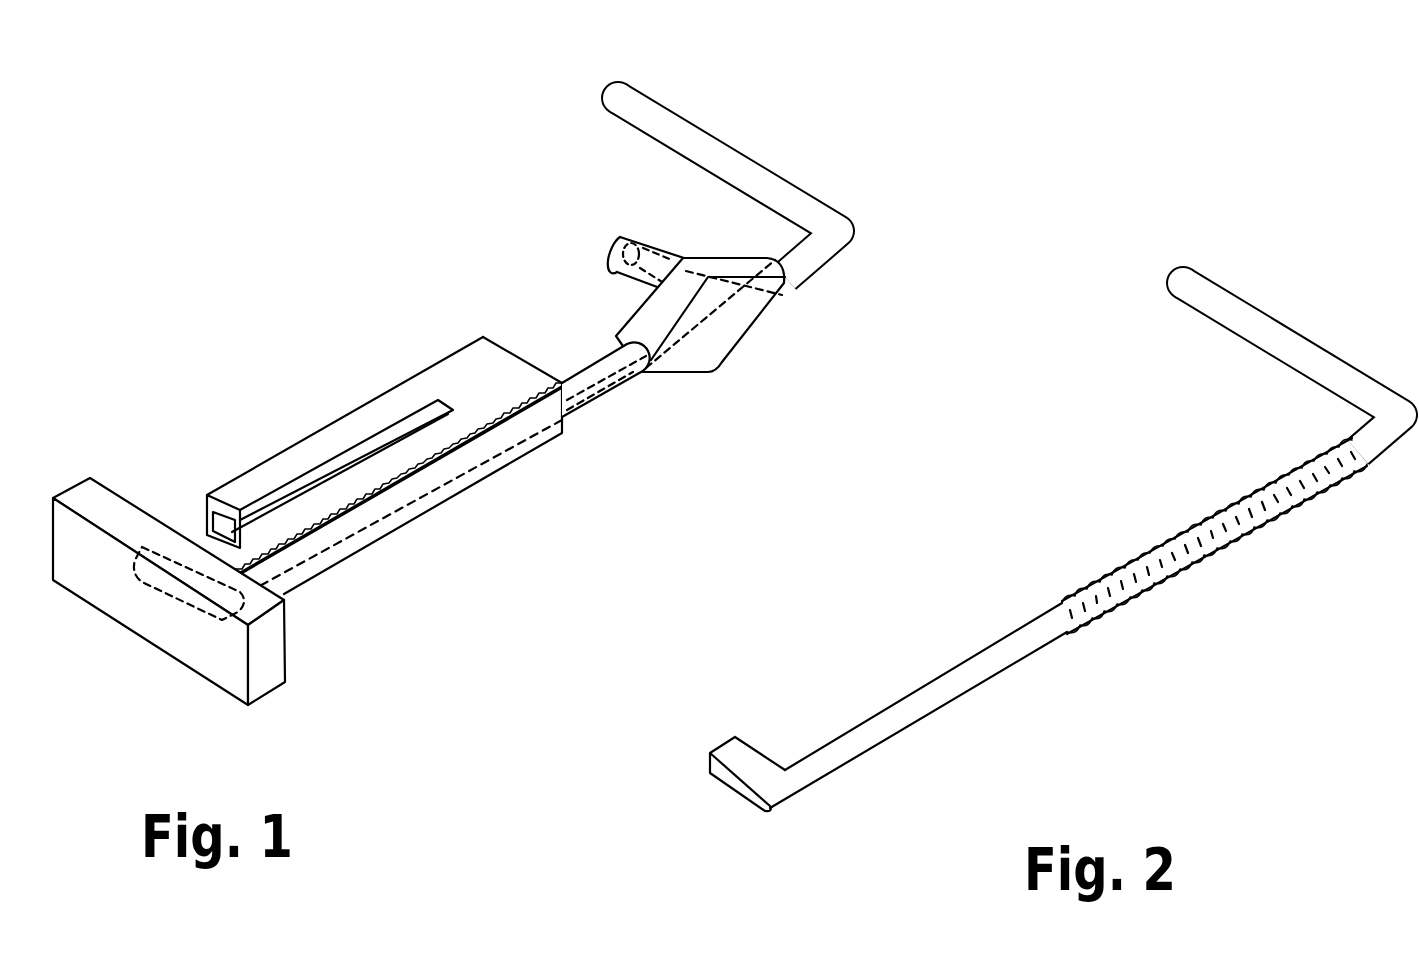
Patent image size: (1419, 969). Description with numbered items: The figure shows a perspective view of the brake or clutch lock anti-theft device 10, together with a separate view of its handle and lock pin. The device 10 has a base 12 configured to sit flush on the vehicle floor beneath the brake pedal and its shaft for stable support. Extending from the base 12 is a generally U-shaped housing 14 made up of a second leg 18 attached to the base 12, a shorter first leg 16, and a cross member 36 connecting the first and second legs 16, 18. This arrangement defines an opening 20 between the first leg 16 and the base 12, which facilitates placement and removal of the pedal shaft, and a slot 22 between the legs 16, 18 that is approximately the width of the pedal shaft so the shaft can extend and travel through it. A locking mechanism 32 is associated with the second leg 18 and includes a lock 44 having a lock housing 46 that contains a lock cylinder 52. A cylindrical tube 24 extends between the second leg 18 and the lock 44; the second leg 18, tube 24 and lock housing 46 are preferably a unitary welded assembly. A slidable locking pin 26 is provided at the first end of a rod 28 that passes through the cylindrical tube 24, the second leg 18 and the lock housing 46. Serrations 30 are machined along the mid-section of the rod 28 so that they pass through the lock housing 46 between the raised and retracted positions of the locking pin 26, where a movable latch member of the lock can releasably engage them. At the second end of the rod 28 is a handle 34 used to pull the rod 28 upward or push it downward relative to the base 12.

In FIG. 1, the brake or clutch lock anti-theft device 10 is at (371, 243).
In FIG. 1, the base 12 is at (93, 488).
In FIG. 1, the U-shaped housing 14 is at (365, 570).
In FIG. 1, the first leg 16 is at (365, 400).
In FIG. 1, the second leg 18 is at (463, 482).
In FIG. 1, the opening 20 is at (205, 532).
In FIG. 1, the slot 22 is at (335, 465).
In FIG. 1, the cylindrical tube 24 is at (603, 405).
In FIG. 1, the locking pin 26 is at (142, 605).
In FIG. 2, the locking pin 26 is at (735, 775).
In FIG. 1, the rod 28 is at (393, 512).
In FIG. 2, the rod 28 is at (1048, 638).
In FIG. 2, the serrations 30 is at (1188, 561).
In FIG. 1, the locking mechanism 32 is at (720, 356).
In FIG. 1, the handle 34 is at (692, 133).
In FIG. 2, the handle 34 is at (1258, 320).
In FIG. 1, the cross member 36 is at (485, 378).
In FIG. 1, the lock 44 is at (637, 222).
In FIG. 1, the lock housing 46 is at (752, 316).
In FIG. 1, the lock cylinder 52 is at (618, 236).